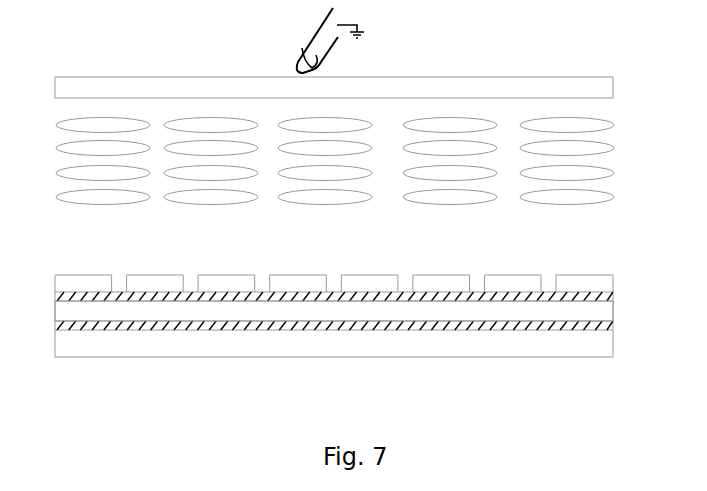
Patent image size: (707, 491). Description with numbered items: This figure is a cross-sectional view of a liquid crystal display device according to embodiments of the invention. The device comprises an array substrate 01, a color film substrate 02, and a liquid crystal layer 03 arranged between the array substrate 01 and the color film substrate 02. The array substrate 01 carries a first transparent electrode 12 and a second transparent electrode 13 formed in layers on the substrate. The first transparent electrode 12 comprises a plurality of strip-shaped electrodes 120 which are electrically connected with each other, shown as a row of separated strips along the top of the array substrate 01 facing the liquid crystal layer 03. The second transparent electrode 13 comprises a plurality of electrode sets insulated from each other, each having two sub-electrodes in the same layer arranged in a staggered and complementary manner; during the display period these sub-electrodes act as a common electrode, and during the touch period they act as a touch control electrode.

The array substrate 01 is at (350, 287).
The color film substrate 02 is at (613, 87).
The liquid crystal layer 03 is at (625, 118).
The first transparent electrode 12 is at (374, 254).
The strip-shaped electrode 120 is at (625, 262).
The second transparent electrode 13 is at (605, 312).